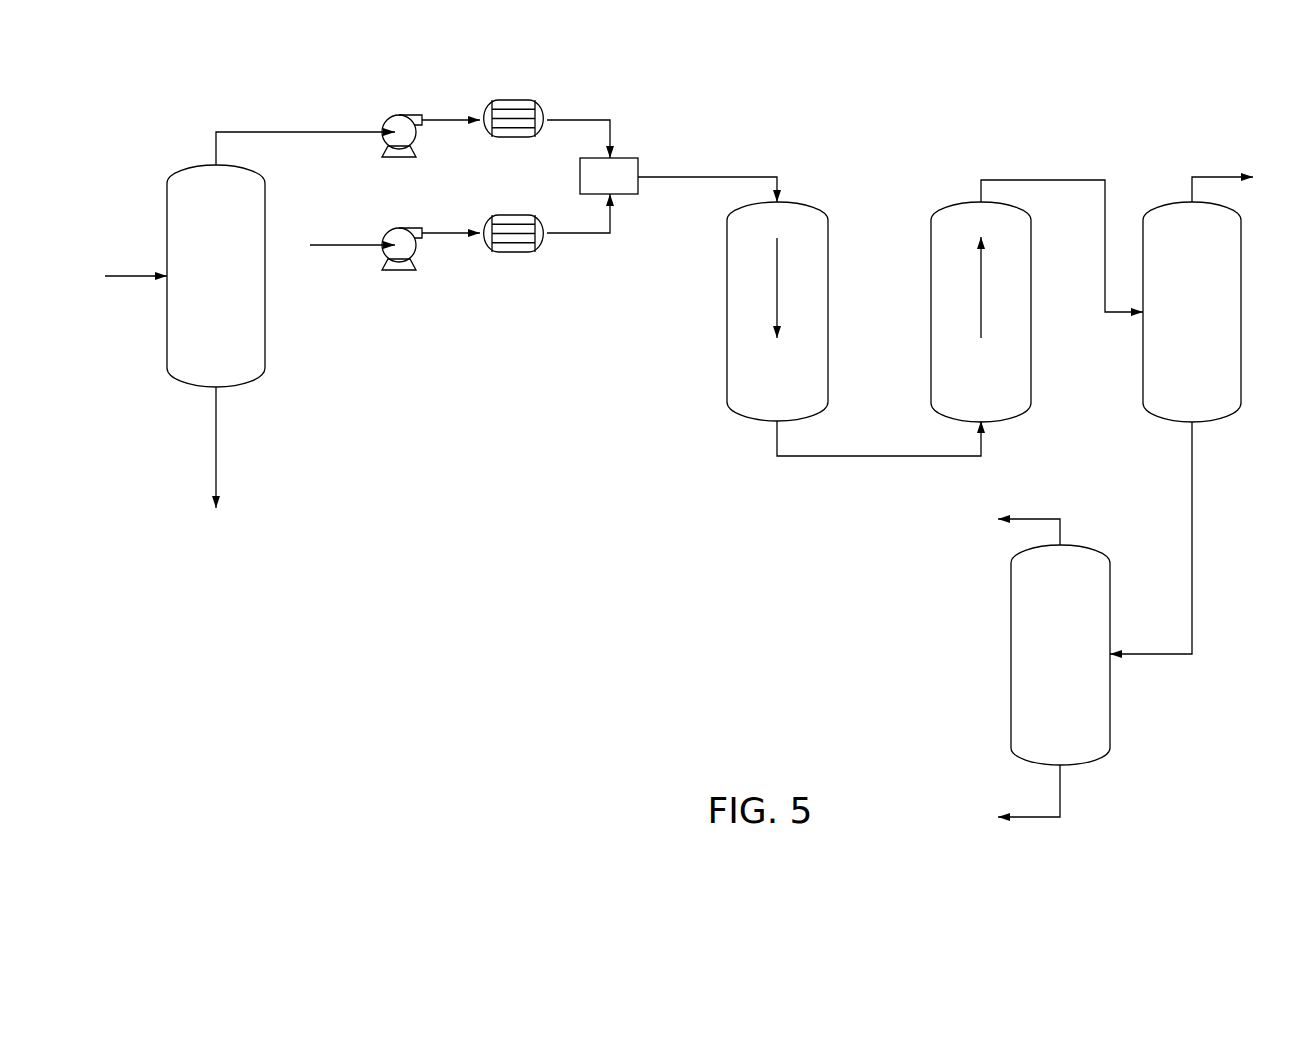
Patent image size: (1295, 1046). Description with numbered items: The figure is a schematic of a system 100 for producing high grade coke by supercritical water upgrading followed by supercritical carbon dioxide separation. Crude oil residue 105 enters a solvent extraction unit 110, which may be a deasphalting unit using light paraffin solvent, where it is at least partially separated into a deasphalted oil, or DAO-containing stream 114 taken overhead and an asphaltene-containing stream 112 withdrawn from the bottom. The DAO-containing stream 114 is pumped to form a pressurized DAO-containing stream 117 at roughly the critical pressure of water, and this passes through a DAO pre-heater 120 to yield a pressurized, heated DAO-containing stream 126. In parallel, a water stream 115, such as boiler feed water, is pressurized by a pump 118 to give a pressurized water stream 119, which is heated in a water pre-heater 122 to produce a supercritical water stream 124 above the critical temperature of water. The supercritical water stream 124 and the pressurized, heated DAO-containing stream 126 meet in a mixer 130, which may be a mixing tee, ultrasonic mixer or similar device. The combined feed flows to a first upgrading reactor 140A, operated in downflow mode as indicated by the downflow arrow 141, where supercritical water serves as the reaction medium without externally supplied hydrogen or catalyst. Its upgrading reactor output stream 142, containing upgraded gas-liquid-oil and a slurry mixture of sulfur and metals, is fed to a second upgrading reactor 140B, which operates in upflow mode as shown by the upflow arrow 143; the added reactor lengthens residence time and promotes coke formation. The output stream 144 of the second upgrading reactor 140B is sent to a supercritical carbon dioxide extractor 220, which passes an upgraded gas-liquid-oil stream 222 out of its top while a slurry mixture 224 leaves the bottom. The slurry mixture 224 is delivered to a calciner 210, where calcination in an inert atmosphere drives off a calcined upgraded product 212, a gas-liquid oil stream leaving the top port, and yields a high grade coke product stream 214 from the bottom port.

The system 100 is at (148, 138).
The crude oil residue 105 is at (125, 276).
The solvent extraction unit 110 is at (194, 288).
The asphaltene-containing stream 112 is at (216, 435).
The DAO-containing stream 114 is at (308, 132).
The water stream 115 is at (358, 245).
The pressurized DAO-containing stream 117 is at (437, 120).
The pump 118 is at (410, 228).
The pressurized water stream 119 is at (452, 233).
The DAO pre-heater 120 is at (513, 100).
The water pre-heater 122 is at (517, 215).
The supercritical water stream 124 is at (583, 233).
The pressurized, heated DAO-containing stream 126 is at (580, 120).
The mixer 130 is at (587, 188).
The first upgrading reactor 140A is at (748, 379).
The second upgrading reactor 140B is at (952, 380).
The downflow arrow 141 is at (777, 279).
The upgrading reactor output stream 142 is at (864, 456).
The upflow arrow 143 is at (981, 279).
The output stream of the second upgrading reactor 144 is at (1040, 180).
The calciner 210 is at (1038, 669).
The calcined upgraded product 212 is at (1040, 519).
The high grade coke product stream 214 is at (1038, 817).
The supercritical CO2 extractor 220 is at (1170, 329).
The upgraded gas-liquid-oil stream 222 is at (1212, 177).
The slurry mixture 224 is at (1192, 555).